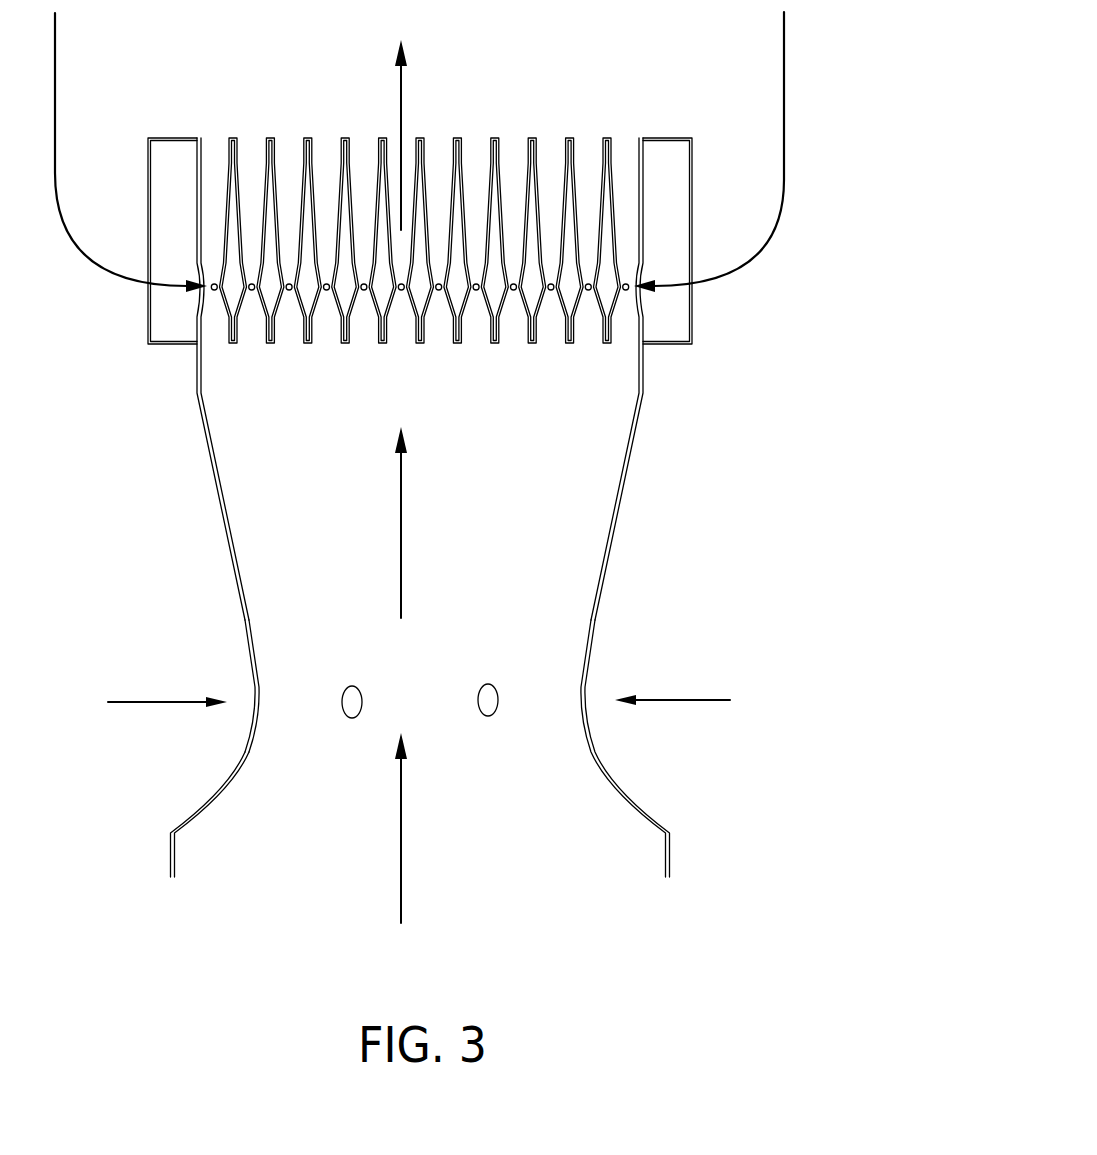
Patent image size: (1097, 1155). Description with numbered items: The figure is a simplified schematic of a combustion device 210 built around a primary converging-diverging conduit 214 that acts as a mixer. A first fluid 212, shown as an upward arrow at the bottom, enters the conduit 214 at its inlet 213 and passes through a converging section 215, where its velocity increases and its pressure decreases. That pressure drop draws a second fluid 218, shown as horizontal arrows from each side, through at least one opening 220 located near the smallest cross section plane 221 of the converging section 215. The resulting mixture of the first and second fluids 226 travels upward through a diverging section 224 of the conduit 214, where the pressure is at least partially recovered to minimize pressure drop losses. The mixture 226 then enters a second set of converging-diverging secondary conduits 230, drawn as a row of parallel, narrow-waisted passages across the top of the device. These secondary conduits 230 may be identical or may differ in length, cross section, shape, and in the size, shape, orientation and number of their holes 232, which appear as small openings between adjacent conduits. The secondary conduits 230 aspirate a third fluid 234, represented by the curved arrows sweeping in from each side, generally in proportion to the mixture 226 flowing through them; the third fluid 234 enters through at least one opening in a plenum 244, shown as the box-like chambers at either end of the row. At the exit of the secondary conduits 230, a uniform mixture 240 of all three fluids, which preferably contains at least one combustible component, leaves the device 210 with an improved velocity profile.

The combustion device 210 is at (846, 302).
The first fluid 212 is at (403, 838).
The inlet 213 is at (668, 848).
The converging-diverging conduit 214 is at (635, 548).
The converging section 215 is at (233, 782).
The second fluid 218 is at (157, 702).
The opening 220 is at (495, 713).
The smallest cross section plane 221 is at (257, 727).
The diverging section 224 is at (632, 440).
The mixture of first and second fluids 226 is at (403, 500).
The secondary converging-diverging conduits 230 is at (570, 143).
The holes 232 is at (252, 290).
The third fluid 234 is at (785, 78).
The uniform mixture 240 is at (403, 80).
The plenum 244 is at (163, 170).